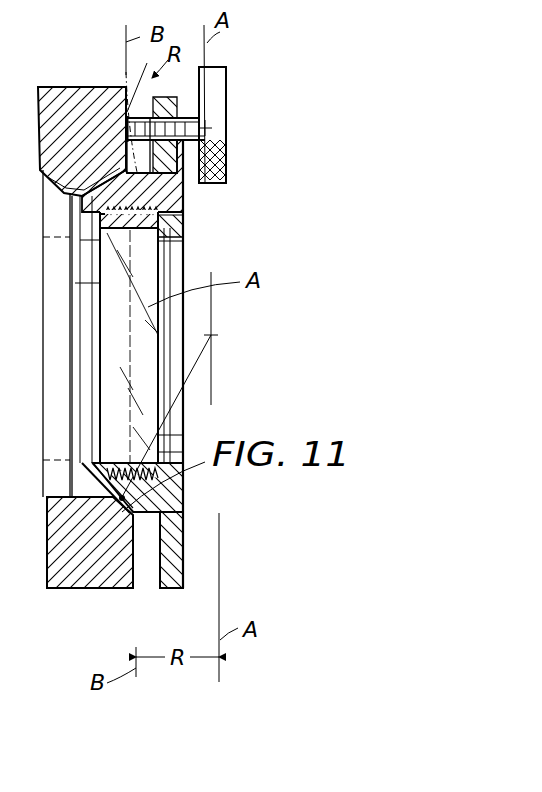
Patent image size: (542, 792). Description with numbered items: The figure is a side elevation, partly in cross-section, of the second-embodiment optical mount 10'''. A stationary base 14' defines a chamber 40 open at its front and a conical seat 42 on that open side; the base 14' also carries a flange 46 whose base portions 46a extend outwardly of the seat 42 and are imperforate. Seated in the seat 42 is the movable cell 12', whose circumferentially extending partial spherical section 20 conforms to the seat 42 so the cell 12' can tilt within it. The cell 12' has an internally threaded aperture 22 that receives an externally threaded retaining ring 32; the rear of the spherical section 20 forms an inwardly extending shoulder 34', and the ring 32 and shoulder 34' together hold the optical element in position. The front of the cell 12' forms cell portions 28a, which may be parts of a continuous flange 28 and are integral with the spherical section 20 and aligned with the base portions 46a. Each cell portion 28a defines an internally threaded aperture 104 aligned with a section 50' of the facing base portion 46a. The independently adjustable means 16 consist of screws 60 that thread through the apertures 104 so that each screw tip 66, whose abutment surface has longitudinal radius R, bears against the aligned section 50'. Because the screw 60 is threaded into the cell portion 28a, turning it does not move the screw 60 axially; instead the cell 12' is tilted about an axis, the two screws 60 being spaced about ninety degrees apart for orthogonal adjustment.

The optical mount 10''' is at (95, 299).
The section of base portion 50' is at (106, 93).
The cell portion 28a is at (185, 135).
The base portion 46a is at (67, 86).
The independently adjustable means 16 is at (228, 88).
The screw tip 66 is at (126, 133).
The screw 60 is at (225, 162).
The internally threaded aperture 104 is at (188, 145).
The cell 12' is at (165, 189).
The retaining ring 32 is at (183, 238).
The shoulder 34' is at (50, 329).
The internally threaded aperture 22 is at (163, 463).
The chamber 40 is at (78, 473).
The seat 42 is at (124, 500).
The flange 46 is at (45, 562).
The partial spherical section 20 is at (138, 515).
The flange 28 is at (173, 590).
The base 14' is at (65, 416).